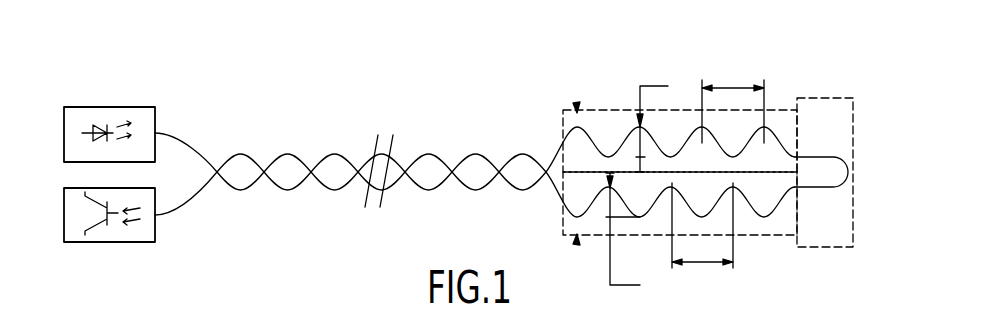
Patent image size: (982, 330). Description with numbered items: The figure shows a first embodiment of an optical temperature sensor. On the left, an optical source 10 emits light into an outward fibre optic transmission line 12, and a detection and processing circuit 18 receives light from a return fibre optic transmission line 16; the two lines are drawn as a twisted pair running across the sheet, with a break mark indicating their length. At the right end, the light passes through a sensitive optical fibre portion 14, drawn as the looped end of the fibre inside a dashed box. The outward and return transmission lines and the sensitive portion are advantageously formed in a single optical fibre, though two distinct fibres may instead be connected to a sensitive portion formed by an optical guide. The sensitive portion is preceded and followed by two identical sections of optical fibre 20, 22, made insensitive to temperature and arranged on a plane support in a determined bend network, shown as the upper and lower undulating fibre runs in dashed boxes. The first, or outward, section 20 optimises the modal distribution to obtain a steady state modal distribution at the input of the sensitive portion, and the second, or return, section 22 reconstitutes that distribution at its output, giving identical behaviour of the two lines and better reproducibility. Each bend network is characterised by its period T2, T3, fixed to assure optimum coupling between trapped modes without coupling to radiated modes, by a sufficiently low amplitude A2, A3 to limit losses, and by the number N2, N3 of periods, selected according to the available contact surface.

The optical source 10 is at (105, 107).
The detection and processing circuit 18 is at (112, 242).
The outward fibre optic transmission line 12 is at (285, 155).
The return fibre optic transmission line 16 is at (427, 191).
The first section of optical fibre 20 is at (777, 110).
The second section of optical fibre 22 is at (772, 237).
The sensitive optical fibre portion 14 is at (829, 248).
The number of periods of the first section N2 is at (577, 112).
The number of periods of the second section N3 is at (577, 236).
The amplitude of the first section A2 is at (652, 118).
The amplitude of the second section A3 is at (623, 230).
The period of the first section T2 is at (733, 103).
The period of the second section T3 is at (702, 235).